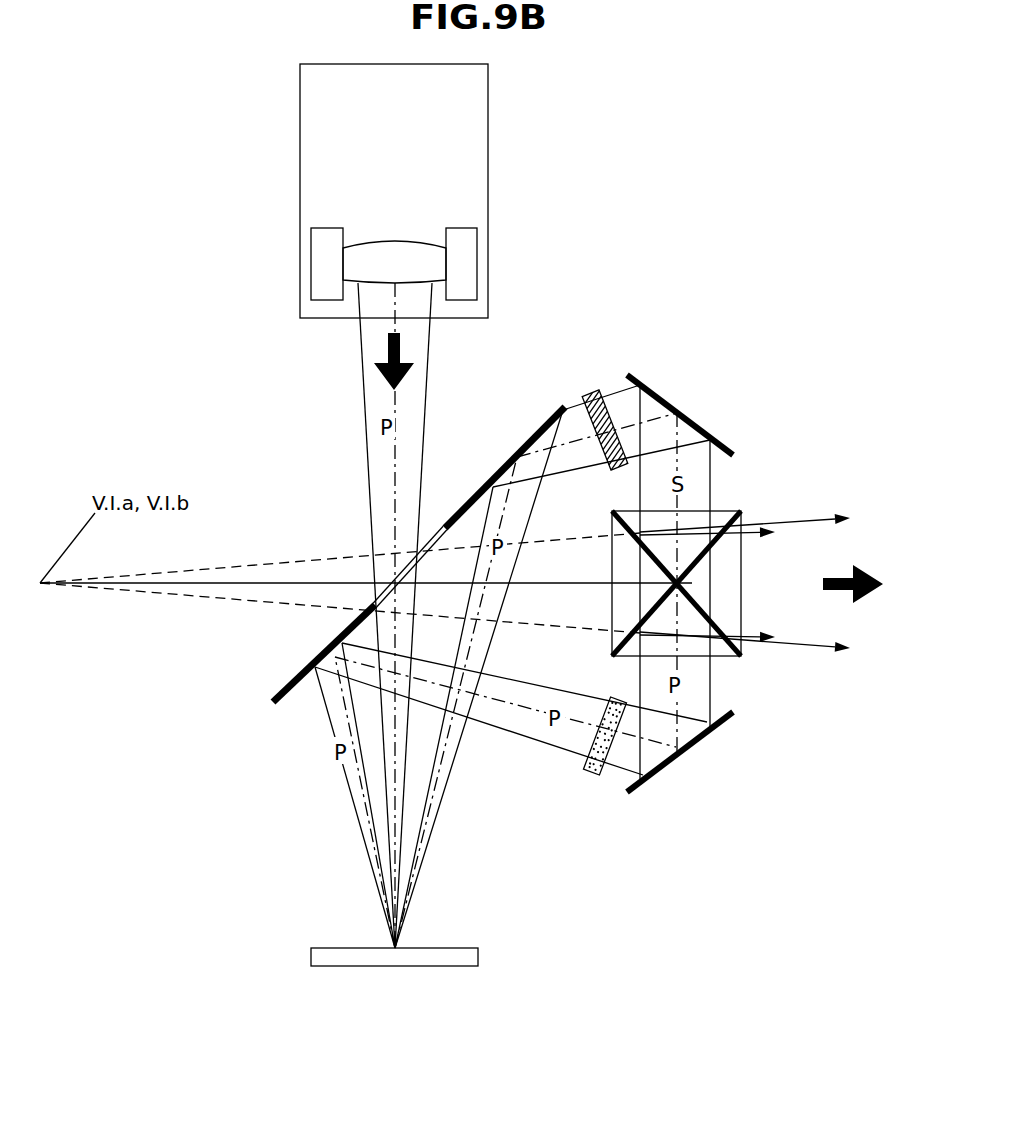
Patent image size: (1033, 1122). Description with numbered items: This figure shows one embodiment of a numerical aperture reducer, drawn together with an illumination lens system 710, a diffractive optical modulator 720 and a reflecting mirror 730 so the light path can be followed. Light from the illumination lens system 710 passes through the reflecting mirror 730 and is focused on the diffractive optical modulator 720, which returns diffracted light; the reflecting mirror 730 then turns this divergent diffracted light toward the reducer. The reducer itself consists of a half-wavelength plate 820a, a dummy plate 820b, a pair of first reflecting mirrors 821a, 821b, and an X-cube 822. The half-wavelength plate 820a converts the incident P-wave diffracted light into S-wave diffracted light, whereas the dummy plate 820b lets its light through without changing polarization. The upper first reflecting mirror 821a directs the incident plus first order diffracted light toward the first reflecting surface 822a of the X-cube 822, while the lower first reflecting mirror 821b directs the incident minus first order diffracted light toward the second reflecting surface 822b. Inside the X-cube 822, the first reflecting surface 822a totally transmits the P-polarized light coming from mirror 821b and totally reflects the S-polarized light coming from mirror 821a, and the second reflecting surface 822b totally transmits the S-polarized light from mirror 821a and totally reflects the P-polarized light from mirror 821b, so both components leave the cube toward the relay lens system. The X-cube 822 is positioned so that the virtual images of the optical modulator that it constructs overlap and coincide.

The illumination lens system 710 is at (488, 130).
The diffractive optical modulator 720 is at (402, 958).
The reflecting mirror 730 is at (537, 432).
The half-wavelength plate 820a is at (586, 392).
The dummy plate 820b is at (587, 777).
The upper first reflecting mirror 821a is at (674, 405).
The lower first reflecting mirror 821b is at (673, 763).
The X-cube 822 is at (762, 586).
The first reflecting surface 822a is at (740, 645).
The second reflecting surface 822b is at (743, 520).